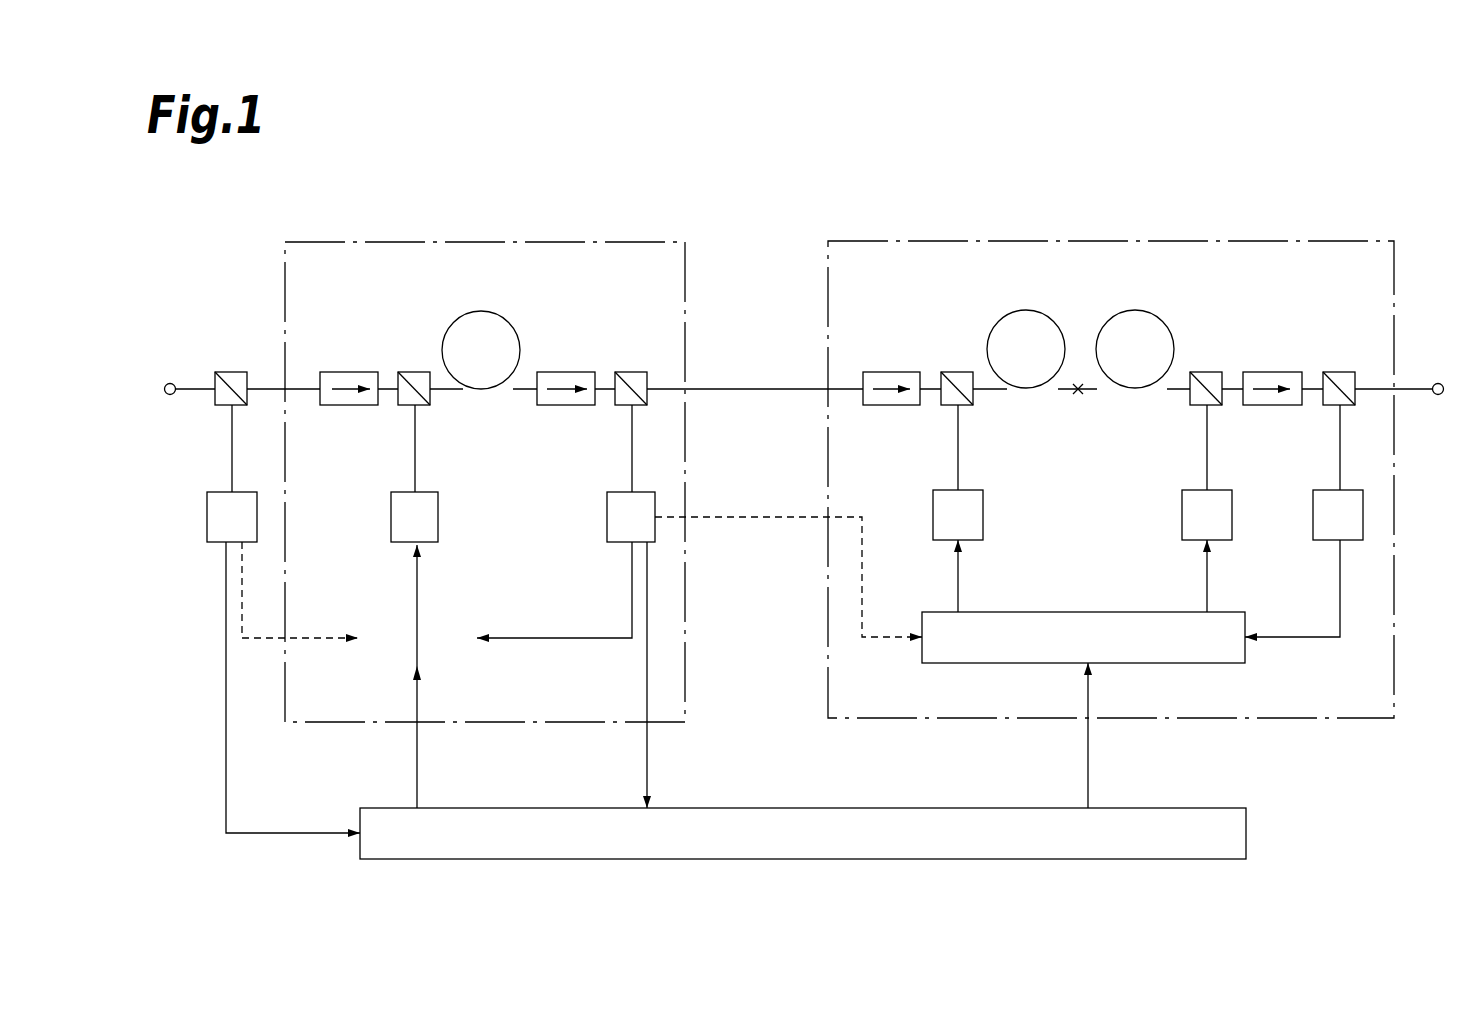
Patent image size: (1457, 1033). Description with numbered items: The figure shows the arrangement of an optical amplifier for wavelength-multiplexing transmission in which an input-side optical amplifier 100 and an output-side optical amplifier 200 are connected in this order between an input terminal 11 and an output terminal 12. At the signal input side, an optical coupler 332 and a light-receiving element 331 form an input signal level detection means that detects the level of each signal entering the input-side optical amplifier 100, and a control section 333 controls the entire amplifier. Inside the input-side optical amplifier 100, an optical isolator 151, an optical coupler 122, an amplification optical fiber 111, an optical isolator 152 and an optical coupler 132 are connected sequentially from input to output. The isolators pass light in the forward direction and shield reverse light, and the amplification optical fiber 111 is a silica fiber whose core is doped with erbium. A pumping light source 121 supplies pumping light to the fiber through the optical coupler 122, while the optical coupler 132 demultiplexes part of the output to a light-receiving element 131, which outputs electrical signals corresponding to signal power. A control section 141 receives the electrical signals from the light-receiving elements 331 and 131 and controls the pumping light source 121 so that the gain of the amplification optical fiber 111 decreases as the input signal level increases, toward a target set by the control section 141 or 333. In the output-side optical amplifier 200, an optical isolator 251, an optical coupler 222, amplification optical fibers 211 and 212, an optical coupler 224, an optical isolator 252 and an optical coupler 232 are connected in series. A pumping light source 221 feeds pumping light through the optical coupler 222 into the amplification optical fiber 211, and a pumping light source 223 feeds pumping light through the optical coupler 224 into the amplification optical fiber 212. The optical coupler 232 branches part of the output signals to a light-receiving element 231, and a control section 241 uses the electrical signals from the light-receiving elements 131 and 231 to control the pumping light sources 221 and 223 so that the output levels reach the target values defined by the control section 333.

The input terminal 11 is at (172, 383).
The output terminal 12 is at (1438, 378).
The input-side optical amplifier 100 is at (443, 242).
The output-side optical amplifier 200 is at (1098, 241).
The amplification optical fiber 111 is at (483, 312).
The amplification optical fiber 211 is at (1025, 310).
The amplification optical fiber 212 is at (1135, 310).
The optical isolator 151 is at (350, 372).
The optical isolator 152 is at (570, 372).
The optical isolator 251 is at (892, 370).
The optical isolator 252 is at (1272, 370).
The optical coupler 122 is at (425, 407).
The optical coupler 222 is at (970, 403).
The optical coupler 224 is at (1198, 403).
The optical coupler 332 is at (220, 407).
The optical coupler 132 is at (625, 407).
The optical coupler 232 is at (1330, 403).
The light-receiving element 331 is at (215, 545).
The light-receiving element 131 is at (618, 545).
The light-receiving element 231 is at (1323, 540).
The pumping light source 121 is at (430, 545).
The pumping light source 221 is at (973, 540).
The pumping light source 223 is at (1192, 540).
The control section 141 is at (485, 622).
The control section 241 is at (1055, 612).
The control section 333 is at (1204, 806).